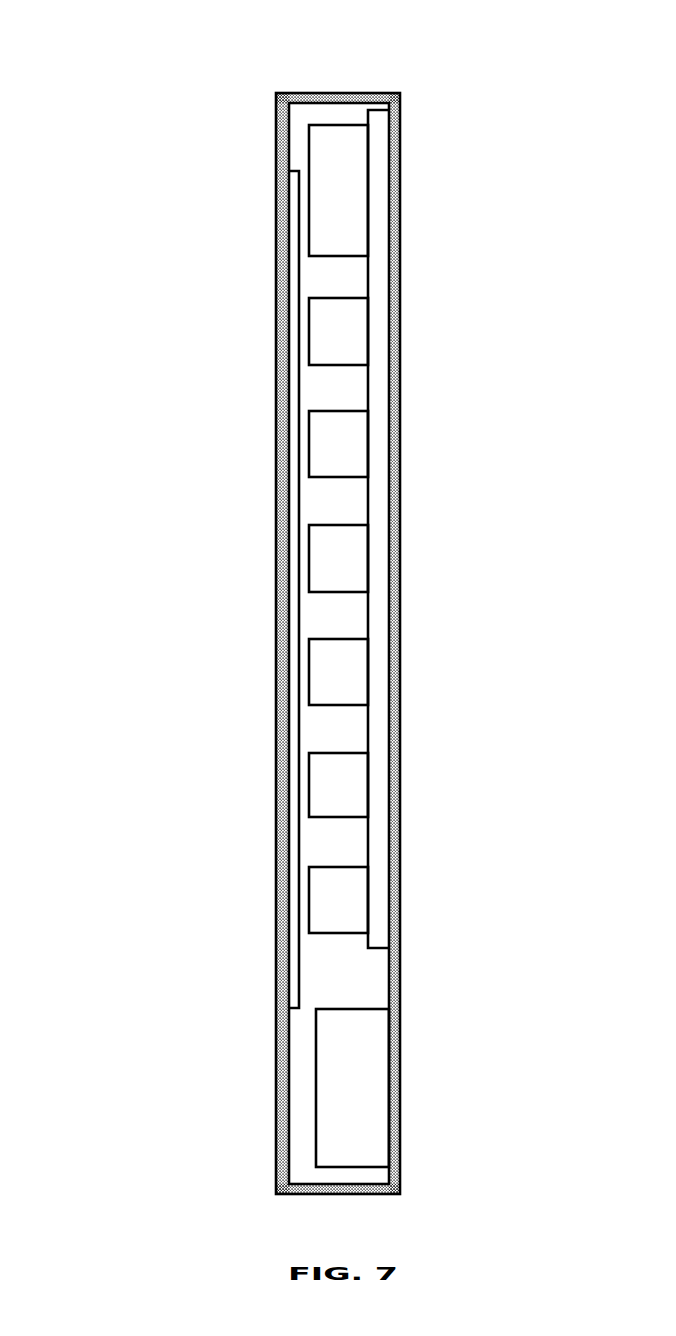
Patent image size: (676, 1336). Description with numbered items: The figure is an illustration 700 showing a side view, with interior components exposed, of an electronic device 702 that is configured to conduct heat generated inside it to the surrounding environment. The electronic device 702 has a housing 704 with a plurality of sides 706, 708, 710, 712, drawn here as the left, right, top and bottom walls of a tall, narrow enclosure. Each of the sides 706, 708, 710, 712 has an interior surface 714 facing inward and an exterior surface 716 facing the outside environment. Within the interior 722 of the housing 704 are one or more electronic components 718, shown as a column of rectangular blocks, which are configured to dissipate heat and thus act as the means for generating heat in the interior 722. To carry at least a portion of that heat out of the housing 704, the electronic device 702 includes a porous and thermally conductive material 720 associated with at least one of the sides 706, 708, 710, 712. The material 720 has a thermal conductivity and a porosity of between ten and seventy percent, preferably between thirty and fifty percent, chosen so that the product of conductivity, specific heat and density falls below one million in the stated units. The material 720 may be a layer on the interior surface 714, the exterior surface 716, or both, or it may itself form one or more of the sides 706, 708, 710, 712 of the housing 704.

The illustration 700 is at (307, 639).
The electronic device 702 is at (383, 644).
The housing 704 is at (275, 145).
The side 706 is at (274, 703).
The side 708 is at (400, 690).
The side 710 is at (372, 92).
The side 712 is at (282, 1195).
The interior surface 714 is at (388, 979).
The exterior surface 716 is at (402, 1000).
The electronic components 718 is at (355, 188).
The porous and thermally conductive material 720 is at (395, 817).
The interior 722 is at (347, 855).